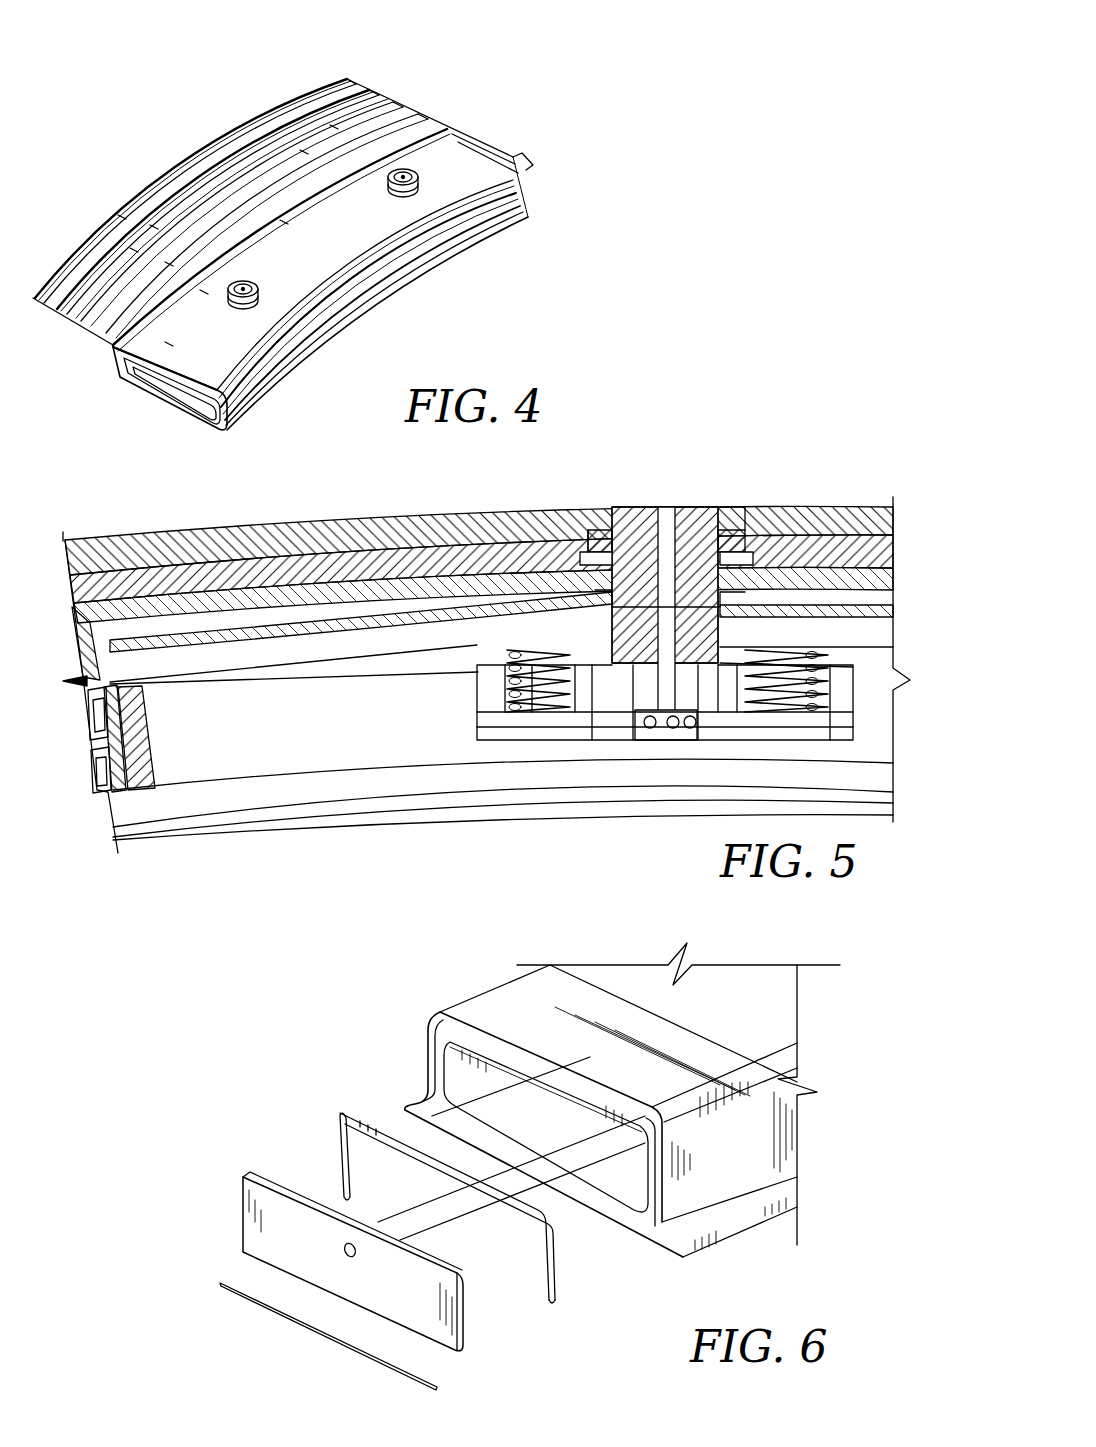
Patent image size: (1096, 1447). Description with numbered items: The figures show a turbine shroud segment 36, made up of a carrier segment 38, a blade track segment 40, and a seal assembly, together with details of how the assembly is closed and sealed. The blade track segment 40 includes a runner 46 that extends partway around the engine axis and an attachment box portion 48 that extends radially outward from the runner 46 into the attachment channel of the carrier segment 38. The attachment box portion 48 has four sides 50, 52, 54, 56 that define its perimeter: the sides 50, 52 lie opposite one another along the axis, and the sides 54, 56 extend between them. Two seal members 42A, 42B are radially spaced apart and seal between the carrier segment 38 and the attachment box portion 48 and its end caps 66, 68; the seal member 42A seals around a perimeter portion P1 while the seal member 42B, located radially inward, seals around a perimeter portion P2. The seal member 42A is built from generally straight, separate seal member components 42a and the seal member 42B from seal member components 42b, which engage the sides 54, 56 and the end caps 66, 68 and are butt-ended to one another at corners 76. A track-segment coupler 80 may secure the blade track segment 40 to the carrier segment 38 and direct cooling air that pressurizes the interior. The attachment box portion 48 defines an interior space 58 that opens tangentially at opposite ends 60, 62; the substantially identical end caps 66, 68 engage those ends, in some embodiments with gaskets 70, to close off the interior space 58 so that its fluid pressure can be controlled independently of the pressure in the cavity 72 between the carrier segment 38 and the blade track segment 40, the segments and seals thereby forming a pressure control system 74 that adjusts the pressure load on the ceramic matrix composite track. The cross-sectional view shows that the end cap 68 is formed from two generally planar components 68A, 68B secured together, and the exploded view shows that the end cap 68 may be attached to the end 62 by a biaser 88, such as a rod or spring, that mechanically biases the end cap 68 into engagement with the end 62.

In FIG. 4, the turbine shroud segment 36 is at (378, 78).
In FIG. 4, the carrier segment 38 is at (450, 130).
In FIG. 5, the carrier segment 38 is at (493, 551).
In FIG. 4, the blade track segment 40 is at (201, 409).
In FIG. 5, the blade track segment 40 is at (603, 441).
In FIG. 4, the seal member 42A is at (533, 197).
In FIG. 5, the seal member 42A is at (88, 722).
In FIG. 4, the seal member 42B is at (516, 208).
In FIG. 5, the seal member 42B is at (98, 777).
In FIG. 4, the seal member components 42a is at (320, 293).
In FIG. 4, the seal member components 42b is at (296, 331).
In FIG. 4, the runner 46 is at (280, 370).
In FIG. 5, the runner 46 is at (367, 778).
In FIG. 6, the runner 46 is at (780, 1196).
In FIG. 4, the attachment box portion 48 is at (533, 182).
In FIG. 5, the attachment box portion 48 is at (539, 605).
In FIG. 6, the attachment box portion 48 is at (792, 1121).
In FIG. 4, the side 50 is at (477, 151).
In FIG. 4, the side 52 is at (139, 382).
In FIG. 6, the side 52 is at (657, 1115).
In FIG. 4, the side 54 is at (236, 246).
In FIG. 6, the side 54 is at (442, 1008).
In FIG. 4, the side 56 is at (376, 263).
In FIG. 6, the side 56 is at (773, 1163).
In FIG. 5, the interior space 58 is at (371, 694).
In FIG. 6, the interior space 58 is at (460, 1068).
In FIG. 4, the end 60 is at (512, 58).
In FIG. 4, the end 62 is at (118, 465).
In FIG. 6, the end 62 is at (865, 1030).
In FIG. 4, the end cap 66 is at (496, 149).
In FIG. 4, the end cap 68 is at (155, 374).
In FIG. 6, the end cap 68 is at (331, 1262).
In FIG. 5, the end cap component 68A is at (121, 766).
In FIG. 5, the end cap component 68B is at (147, 764).
In FIG. 6, the gasket 70 is at (222, 1268).
In FIG. 5, the cavity 72 is at (509, 591).
In FIG. 5, the pressure control system 74 is at (736, 500).
In FIG. 4, the corners 76 is at (217, 402).
In FIG. 4, the track-segment coupler 80 is at (360, 172).
In FIG. 6, the biaser 88 is at (450, 1216).
In FIG. 4, the portion of the perimeter P1 is at (460, 214).
In FIG. 4, the portion of the perimeter P2 is at (436, 247).